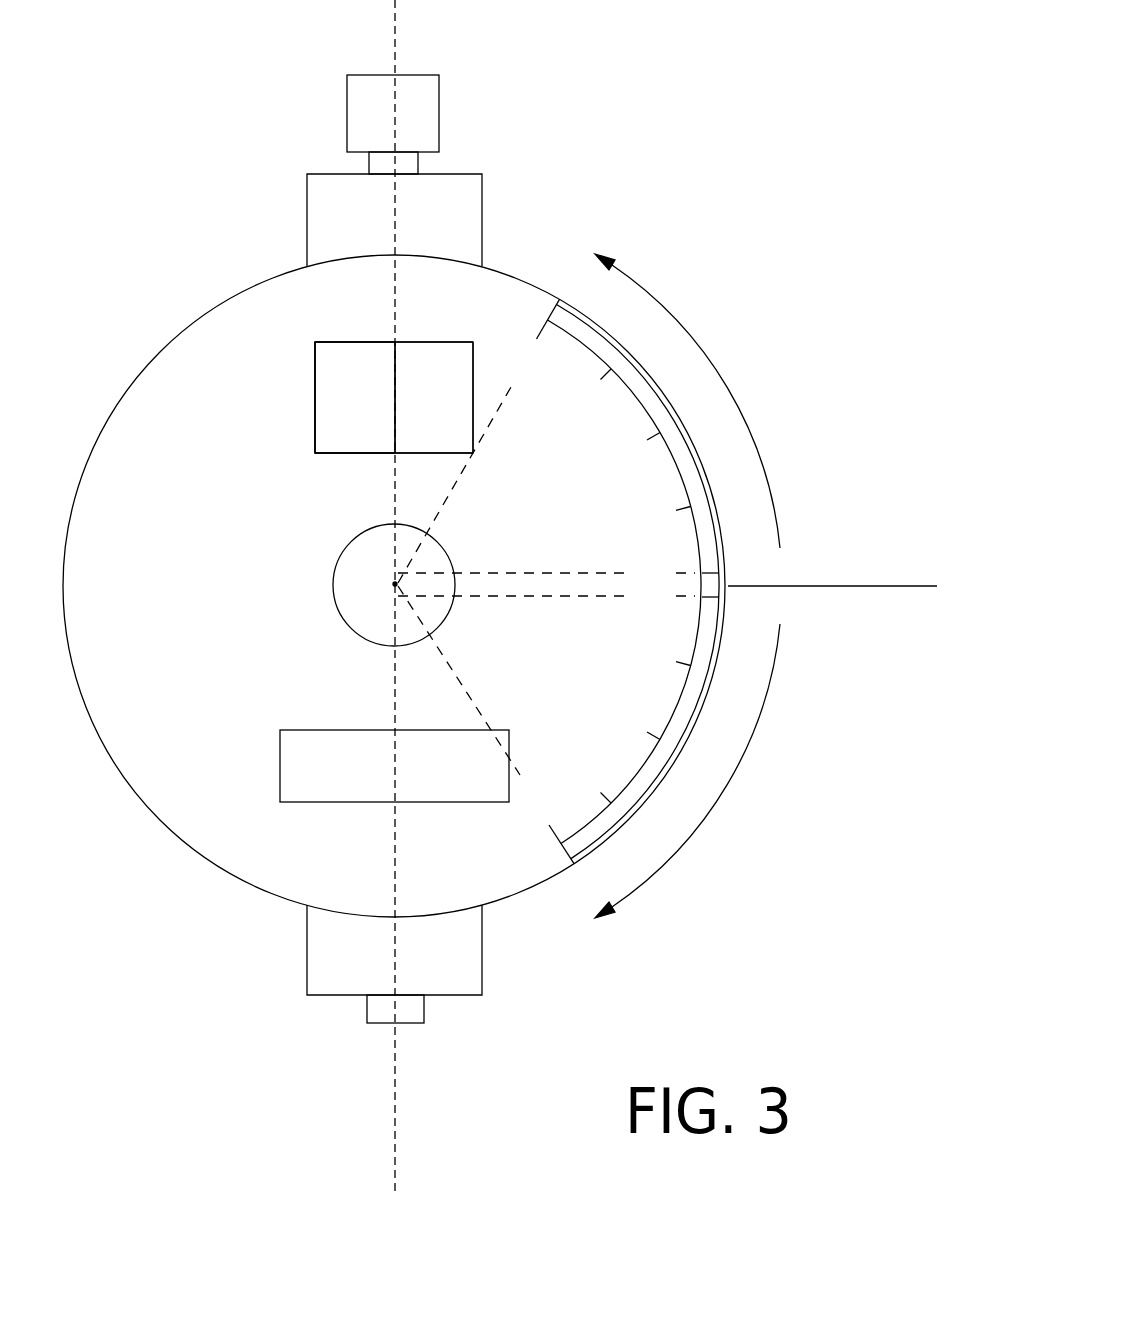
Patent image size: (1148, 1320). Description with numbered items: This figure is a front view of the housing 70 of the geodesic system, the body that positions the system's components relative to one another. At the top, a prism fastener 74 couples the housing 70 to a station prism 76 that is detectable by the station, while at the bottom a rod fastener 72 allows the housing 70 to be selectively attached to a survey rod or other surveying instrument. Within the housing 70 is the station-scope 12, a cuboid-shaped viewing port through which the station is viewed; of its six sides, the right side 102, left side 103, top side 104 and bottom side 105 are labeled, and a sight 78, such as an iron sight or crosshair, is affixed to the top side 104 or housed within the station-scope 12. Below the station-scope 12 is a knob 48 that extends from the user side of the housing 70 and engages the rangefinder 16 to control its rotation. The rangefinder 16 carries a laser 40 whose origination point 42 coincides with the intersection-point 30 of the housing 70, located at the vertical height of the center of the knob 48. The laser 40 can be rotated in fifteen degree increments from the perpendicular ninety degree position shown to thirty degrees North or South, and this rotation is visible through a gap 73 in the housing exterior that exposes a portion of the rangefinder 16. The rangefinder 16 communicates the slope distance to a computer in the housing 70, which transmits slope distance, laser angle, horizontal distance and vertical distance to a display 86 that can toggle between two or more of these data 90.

The station-scope 12 is at (355, 397).
The rangefinder 16 is at (713, 580).
The intersection-point 30 is at (366, 566).
The laser 40 is at (825, 583).
The origination point 42 is at (394, 585).
The knob 48 is at (370, 586).
The housing 70 is at (394, 625).
The rod fastener 72 is at (425, 1025).
The gap 73 is at (620, 358).
The prism fastener 74 is at (418, 162).
The station prism 76 is at (439, 107).
The sight 78 is at (401, 391).
The display 86 is at (370, 798).
The data 90 is at (355, 790).
The right side 102 is at (475, 362).
The left side 103 is at (288, 397).
The top side 104 is at (394, 322).
The bottom side 105 is at (394, 473).